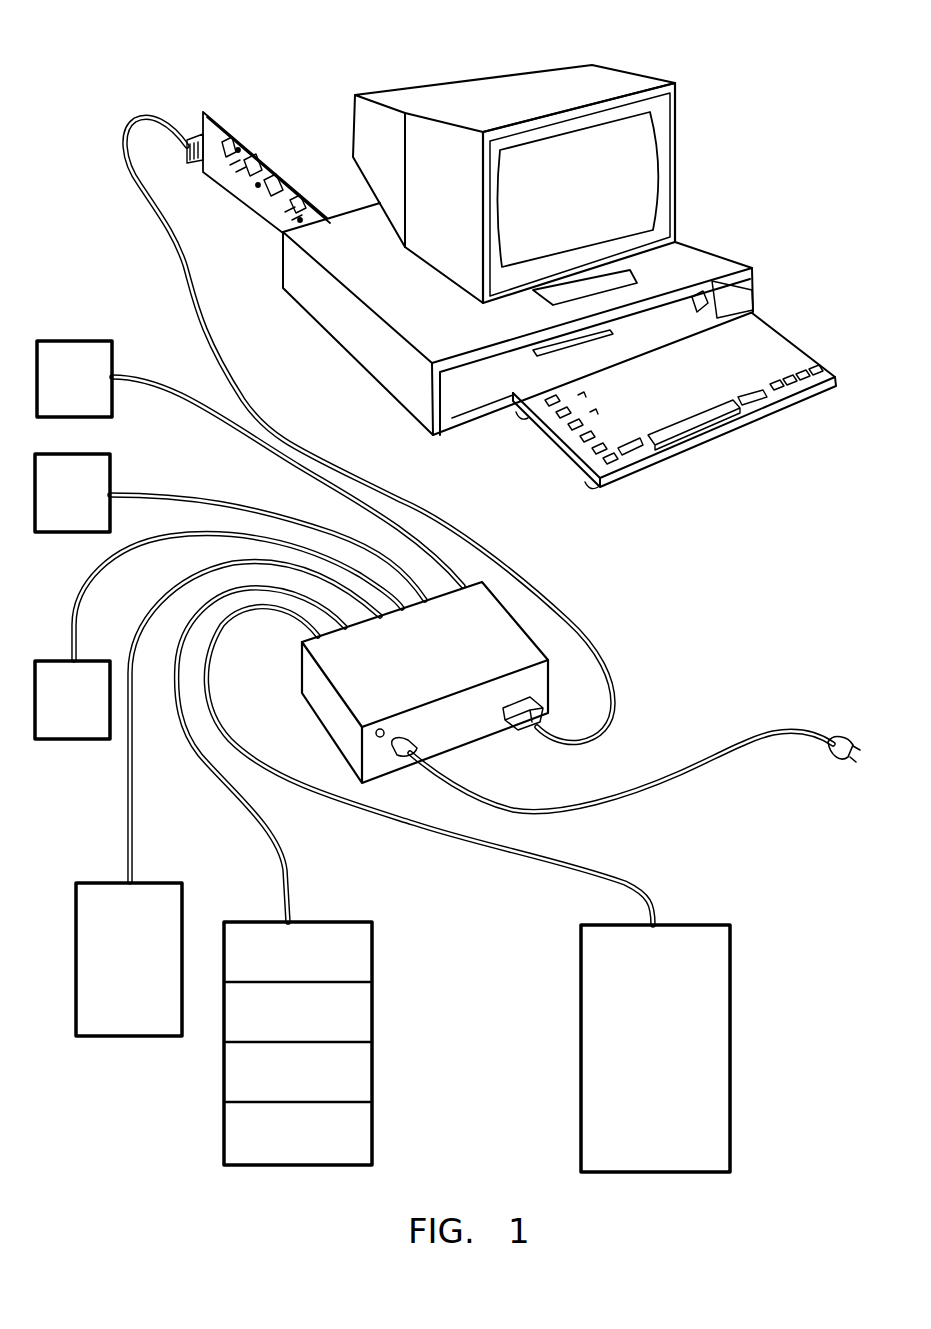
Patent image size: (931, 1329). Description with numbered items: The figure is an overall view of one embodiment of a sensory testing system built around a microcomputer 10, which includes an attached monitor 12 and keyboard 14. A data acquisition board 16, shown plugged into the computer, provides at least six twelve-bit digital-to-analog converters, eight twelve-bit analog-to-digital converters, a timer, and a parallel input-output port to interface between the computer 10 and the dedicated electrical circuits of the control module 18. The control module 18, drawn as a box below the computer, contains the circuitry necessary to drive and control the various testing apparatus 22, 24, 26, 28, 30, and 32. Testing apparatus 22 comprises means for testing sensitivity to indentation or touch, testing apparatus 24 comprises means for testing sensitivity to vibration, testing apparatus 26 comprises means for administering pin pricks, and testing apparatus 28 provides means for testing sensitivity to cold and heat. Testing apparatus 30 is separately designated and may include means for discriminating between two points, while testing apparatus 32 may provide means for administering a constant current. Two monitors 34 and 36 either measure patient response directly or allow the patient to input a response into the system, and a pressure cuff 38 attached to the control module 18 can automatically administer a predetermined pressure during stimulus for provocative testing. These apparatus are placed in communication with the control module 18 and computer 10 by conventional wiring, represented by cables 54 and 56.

The microcomputer 10 is at (707, 177).
The monitor 12 is at (452, 87).
The keyboard 14 is at (760, 360).
The data acquisition board 16 is at (245, 148).
The control module 18 is at (440, 660).
The testing apparatus 22 is at (358, 960).
The testing apparatus 24 is at (360, 1015).
The testing apparatus 26 is at (358, 1074).
The testing apparatus 28 is at (360, 1132).
The testing apparatus 30 is at (705, 982).
The testing apparatus 32 is at (143, 970).
The monitor 34 is at (87, 717).
The monitor 36 is at (87, 505).
The pressure cuff 38 is at (90, 388).
The cable 54 is at (290, 872).
The cable 56 is at (467, 840).